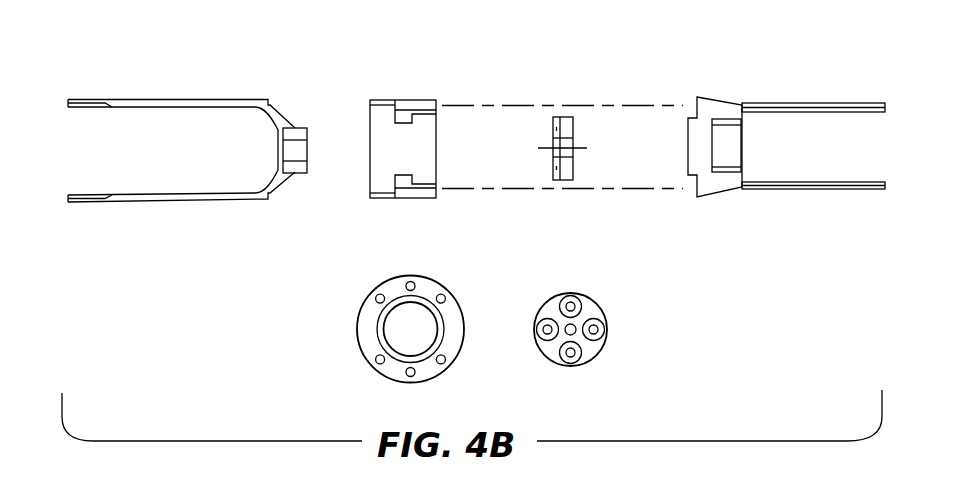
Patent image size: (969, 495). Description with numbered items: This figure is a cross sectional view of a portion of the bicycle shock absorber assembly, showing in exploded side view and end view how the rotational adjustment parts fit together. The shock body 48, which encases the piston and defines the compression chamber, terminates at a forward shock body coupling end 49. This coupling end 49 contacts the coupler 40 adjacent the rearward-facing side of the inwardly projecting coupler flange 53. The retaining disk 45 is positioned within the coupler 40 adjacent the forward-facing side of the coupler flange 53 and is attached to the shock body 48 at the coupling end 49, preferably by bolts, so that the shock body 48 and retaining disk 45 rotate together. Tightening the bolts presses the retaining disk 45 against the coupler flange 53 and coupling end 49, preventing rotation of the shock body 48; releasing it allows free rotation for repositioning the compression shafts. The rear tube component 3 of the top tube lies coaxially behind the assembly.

The rear tube component 3 is at (820, 103).
The coupler 40 is at (413, 100).
The retaining disk 45 is at (562, 116).
The shock body 48 is at (173, 100).
The forward shock body coupling end 49 is at (302, 174).
The coupler flange 53 is at (388, 104).